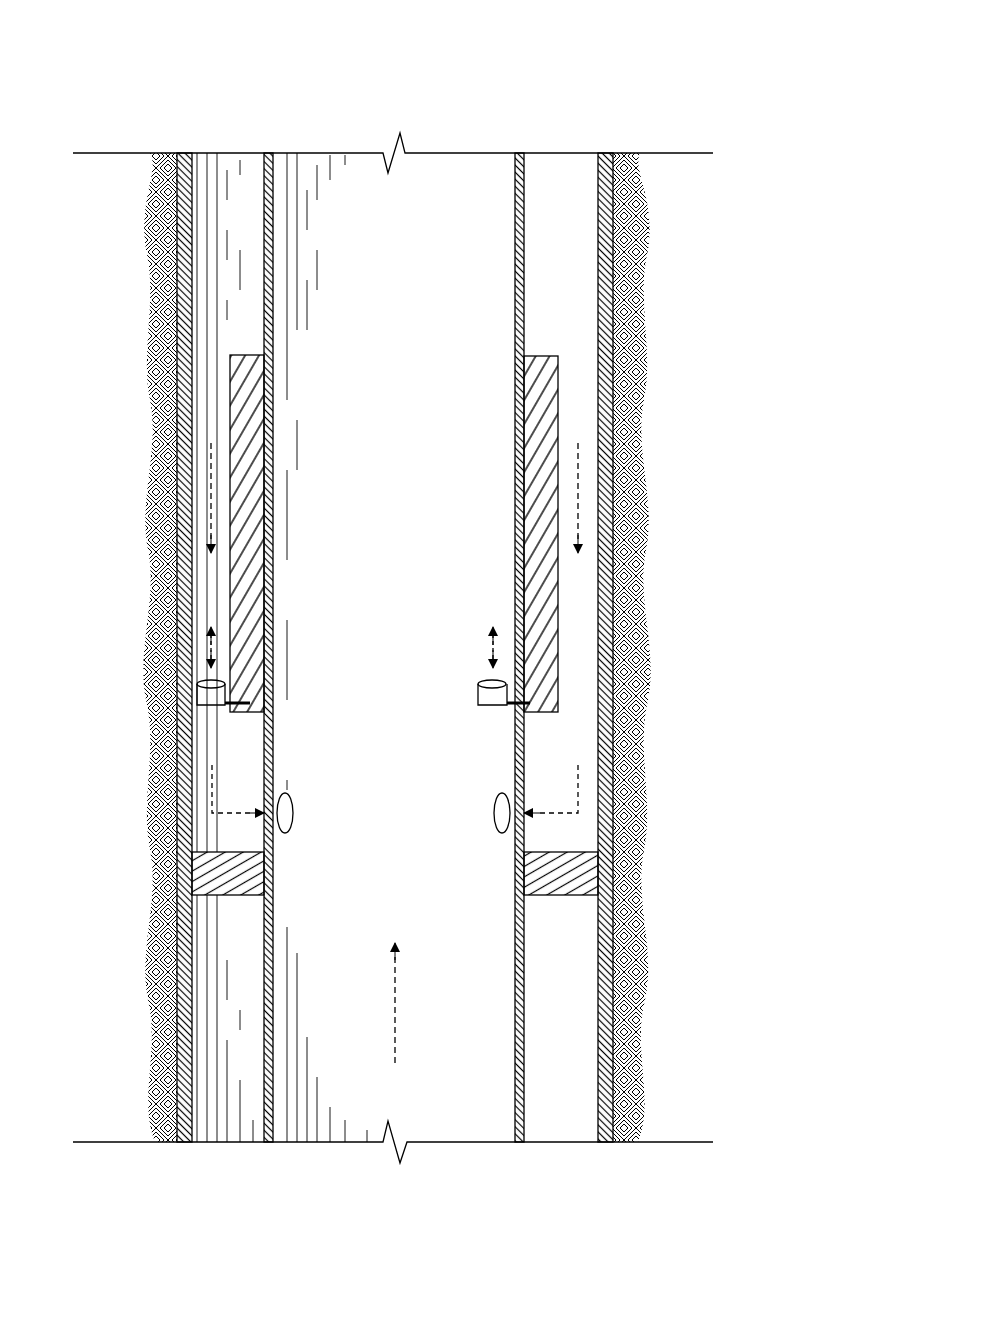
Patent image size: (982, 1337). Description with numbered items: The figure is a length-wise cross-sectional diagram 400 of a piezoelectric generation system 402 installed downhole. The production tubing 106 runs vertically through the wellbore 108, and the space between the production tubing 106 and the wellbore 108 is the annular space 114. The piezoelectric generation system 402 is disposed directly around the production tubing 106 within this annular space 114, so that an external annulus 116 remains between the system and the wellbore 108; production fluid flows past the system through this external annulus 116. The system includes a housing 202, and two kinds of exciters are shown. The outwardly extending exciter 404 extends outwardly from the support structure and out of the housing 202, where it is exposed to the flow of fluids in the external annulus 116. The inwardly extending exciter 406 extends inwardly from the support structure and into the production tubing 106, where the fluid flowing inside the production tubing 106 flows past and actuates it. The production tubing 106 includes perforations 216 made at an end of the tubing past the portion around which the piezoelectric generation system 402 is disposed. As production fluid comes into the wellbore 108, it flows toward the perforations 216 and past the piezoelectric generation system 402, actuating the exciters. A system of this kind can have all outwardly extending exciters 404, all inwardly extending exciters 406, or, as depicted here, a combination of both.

The length-wise cross-sectional diagram 400 is at (722, 58).
The production tubing 106 is at (515, 167).
The wellbore 108 is at (613, 290).
The annular space 114 is at (213, 283).
The external annulus 116 is at (207, 433).
The housing 202 is at (230, 567).
The piezoelectric generation system 402 is at (558, 400).
The outwardly extending exciter 404 is at (197, 697).
The inwardly extending exciter 406 is at (492, 705).
The perforations 216 is at (505, 833).